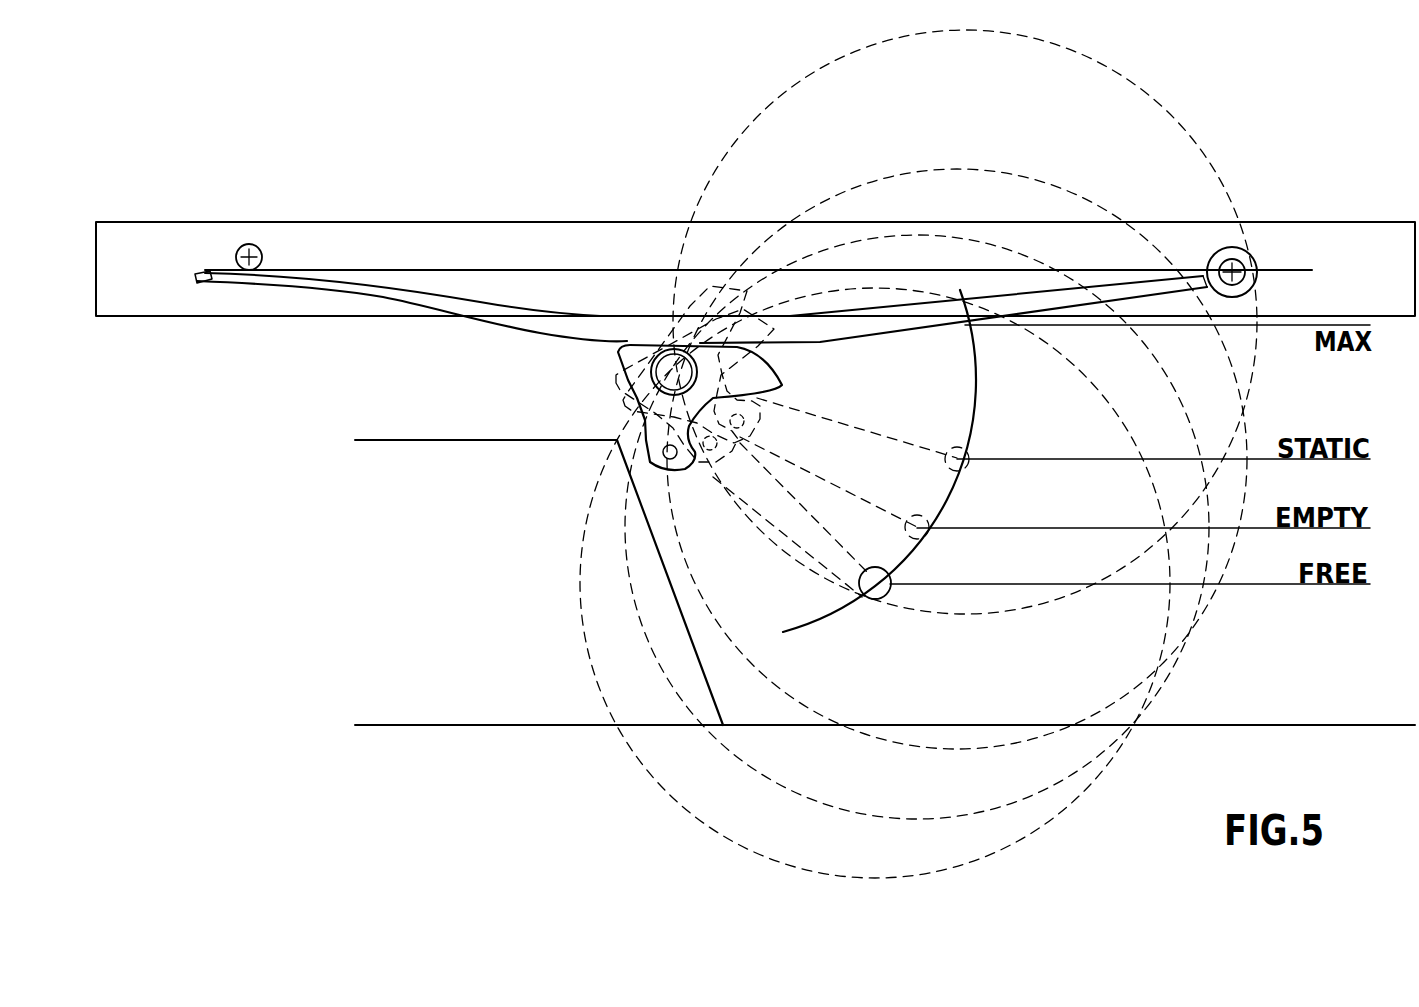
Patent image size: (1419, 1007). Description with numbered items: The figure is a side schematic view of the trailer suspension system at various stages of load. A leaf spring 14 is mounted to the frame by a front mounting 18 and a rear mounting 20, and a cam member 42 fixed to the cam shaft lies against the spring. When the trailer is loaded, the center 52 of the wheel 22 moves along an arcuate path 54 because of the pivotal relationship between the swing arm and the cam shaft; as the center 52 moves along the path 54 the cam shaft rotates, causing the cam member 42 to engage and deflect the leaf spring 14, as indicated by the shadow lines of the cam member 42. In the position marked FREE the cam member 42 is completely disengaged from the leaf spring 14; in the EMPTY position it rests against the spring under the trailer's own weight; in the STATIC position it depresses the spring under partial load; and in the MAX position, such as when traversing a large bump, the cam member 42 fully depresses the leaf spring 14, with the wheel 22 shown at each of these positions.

The leaf spring 14 is at (423, 243).
The front mounting 18 is at (264, 257).
The rear mounting 20 is at (1257, 264).
The wheel 22 is at (1165, 106).
The cam member 42 is at (617, 353).
The center of wheel 52 is at (877, 600).
The arcuate path 54 is at (968, 388).